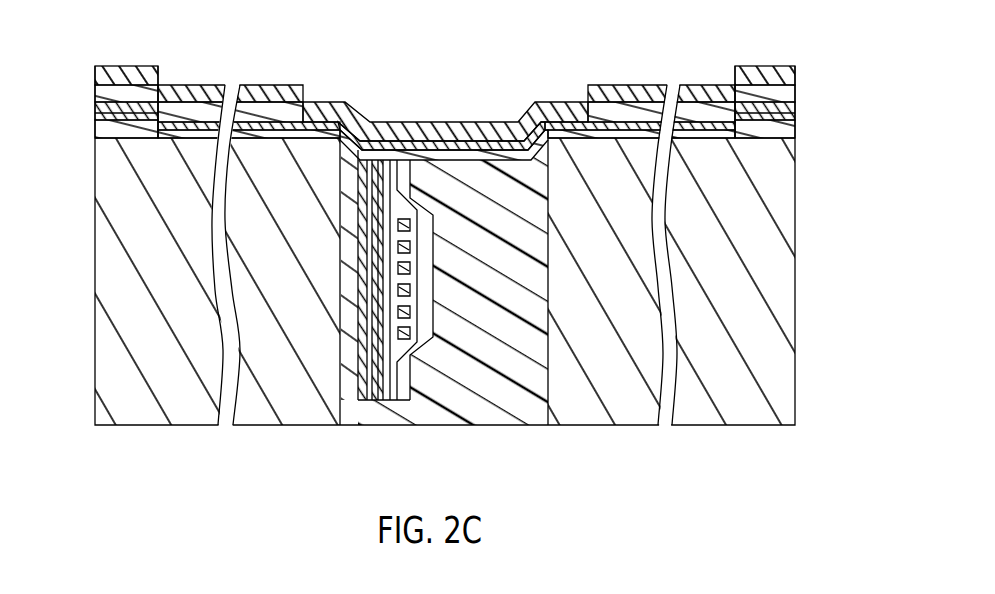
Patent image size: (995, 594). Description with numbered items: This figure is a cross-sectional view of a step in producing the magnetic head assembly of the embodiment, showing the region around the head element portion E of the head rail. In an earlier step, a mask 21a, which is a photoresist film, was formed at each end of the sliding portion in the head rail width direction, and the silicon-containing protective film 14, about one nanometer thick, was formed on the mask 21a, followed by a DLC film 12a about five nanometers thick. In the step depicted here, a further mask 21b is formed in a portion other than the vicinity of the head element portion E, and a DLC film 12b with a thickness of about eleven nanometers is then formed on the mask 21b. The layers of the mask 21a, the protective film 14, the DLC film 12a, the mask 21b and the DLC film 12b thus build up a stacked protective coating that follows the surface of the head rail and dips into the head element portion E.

The DLC film 12b is at (122, 66).
The DLC film 12a is at (104, 112).
The silicon-containing protective film 14 is at (108, 113).
The mask 21a is at (108, 130).
The mask 21b is at (110, 97).
The head element portion E is at (548, 433).